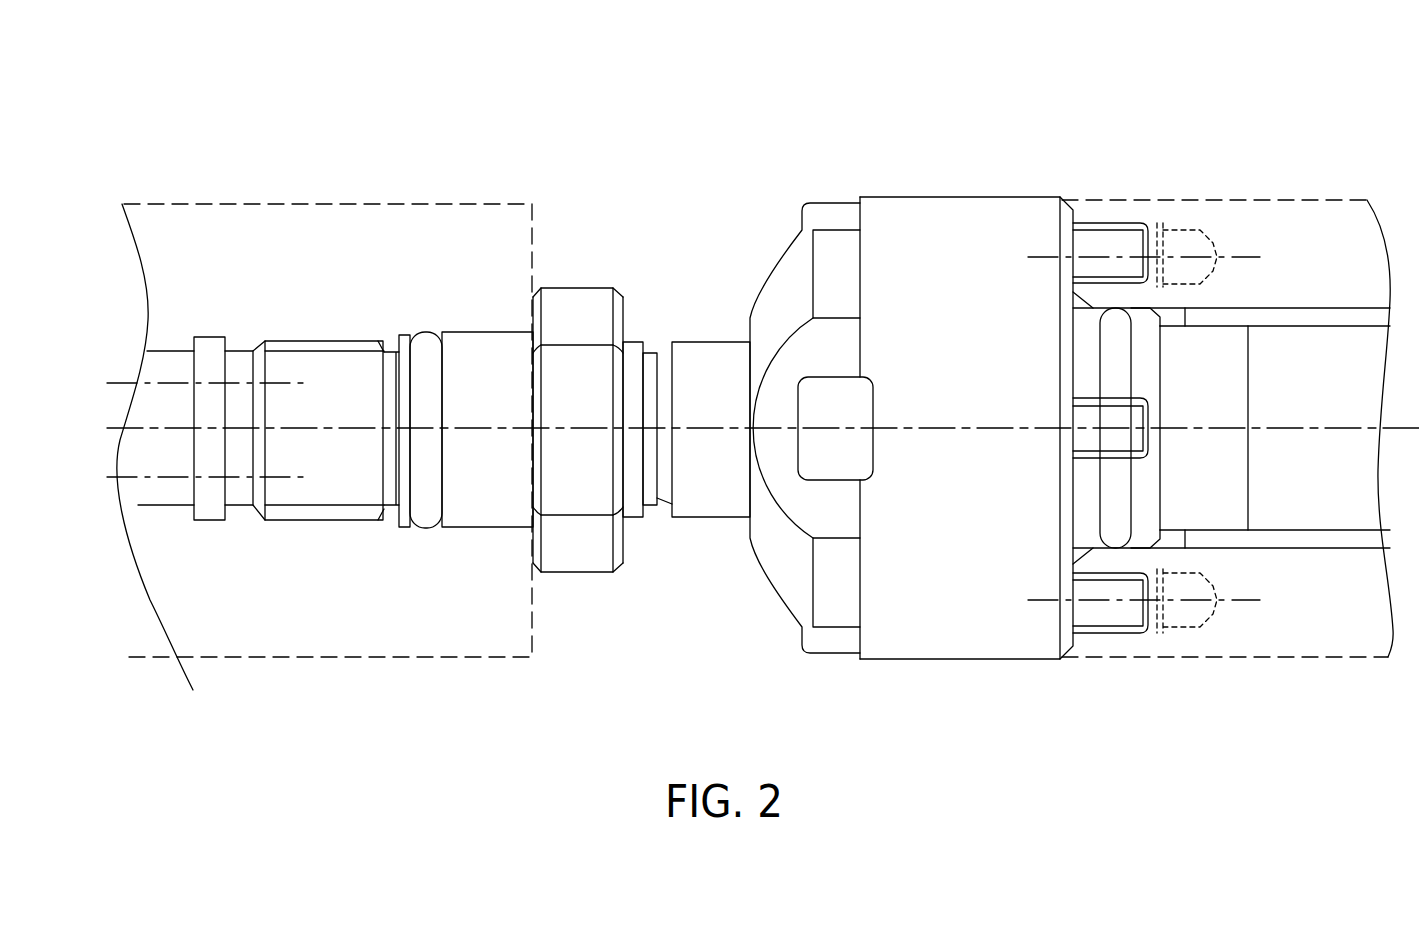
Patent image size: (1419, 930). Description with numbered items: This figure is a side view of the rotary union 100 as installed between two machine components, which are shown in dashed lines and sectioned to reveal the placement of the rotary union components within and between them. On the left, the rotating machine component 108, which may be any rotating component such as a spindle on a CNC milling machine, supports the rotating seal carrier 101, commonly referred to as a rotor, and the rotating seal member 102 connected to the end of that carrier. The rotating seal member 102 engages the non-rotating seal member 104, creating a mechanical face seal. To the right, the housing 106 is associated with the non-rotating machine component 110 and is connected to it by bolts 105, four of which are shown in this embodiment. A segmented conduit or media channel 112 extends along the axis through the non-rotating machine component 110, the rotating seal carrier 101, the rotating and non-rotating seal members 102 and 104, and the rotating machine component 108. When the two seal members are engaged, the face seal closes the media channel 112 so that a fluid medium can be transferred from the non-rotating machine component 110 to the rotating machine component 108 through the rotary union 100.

The rotary union 100 is at (832, 103).
The rotating seal carrier 101 is at (487, 350).
The rotating seal member 102 is at (648, 365).
The non-rotating seal member 104 is at (665, 364).
The bolts 105 is at (832, 212).
The housing 106 is at (986, 212).
The rotating machine component 108 is at (367, 193).
The non-rotating machine component 110 is at (1280, 193).
The media channel 112 is at (110, 492).